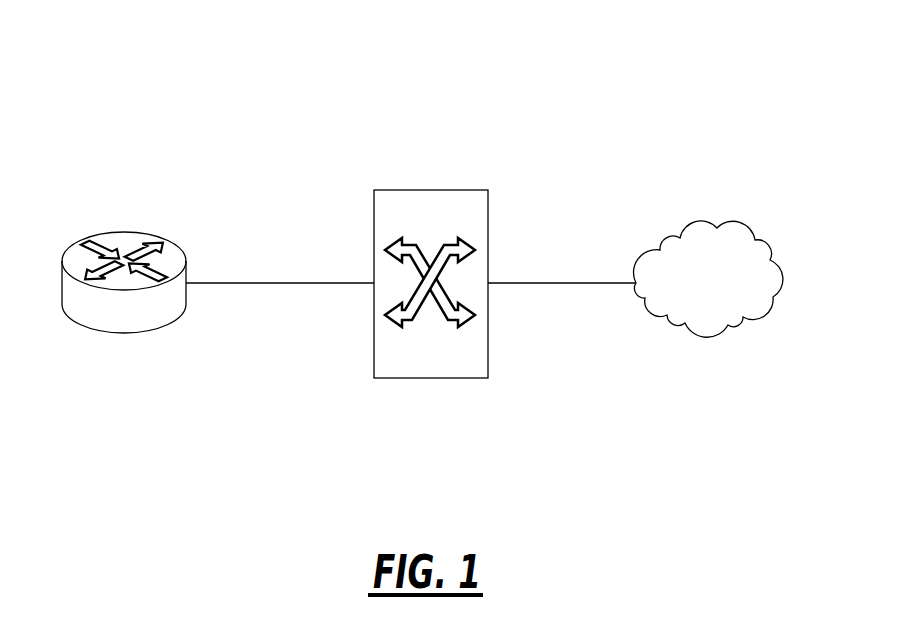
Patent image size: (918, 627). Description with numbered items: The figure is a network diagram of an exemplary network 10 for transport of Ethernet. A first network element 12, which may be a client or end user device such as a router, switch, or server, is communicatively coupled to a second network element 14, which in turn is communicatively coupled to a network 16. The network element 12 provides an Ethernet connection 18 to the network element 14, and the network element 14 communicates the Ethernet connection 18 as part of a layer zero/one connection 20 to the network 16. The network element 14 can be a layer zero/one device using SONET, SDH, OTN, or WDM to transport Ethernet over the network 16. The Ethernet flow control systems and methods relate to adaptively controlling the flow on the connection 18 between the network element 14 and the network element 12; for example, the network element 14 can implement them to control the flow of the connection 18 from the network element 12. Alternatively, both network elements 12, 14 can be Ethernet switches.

The network 10 is at (512, 72).
The first network element 12 is at (137, 232).
The second network element 14 is at (488, 225).
The network 16 is at (748, 222).
The Ethernet connection 18 is at (313, 283).
The layer 0/1 connection 20 is at (590, 283).